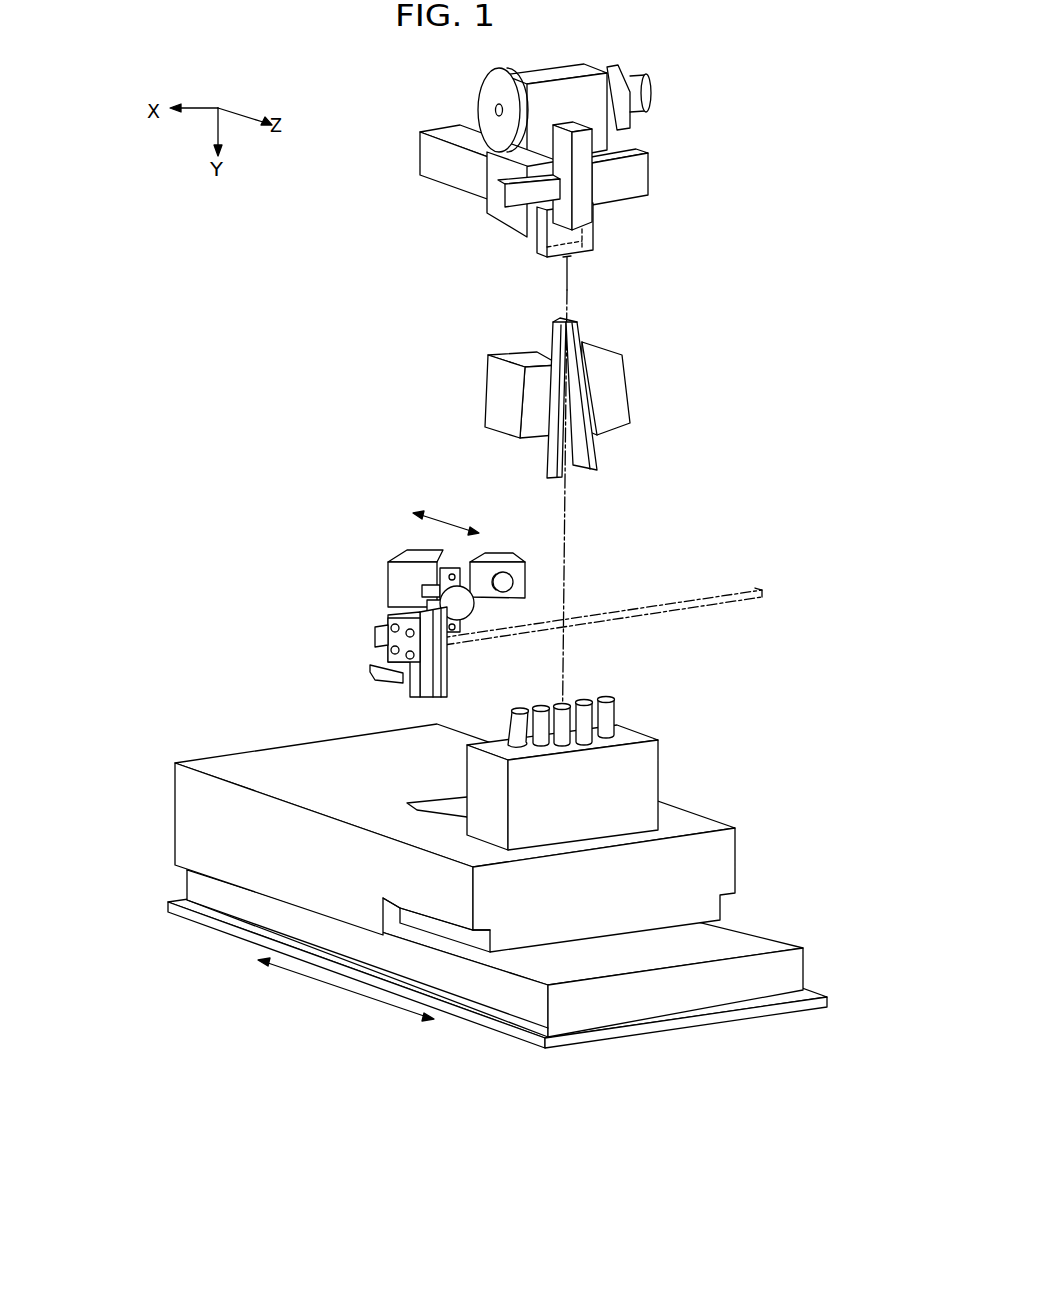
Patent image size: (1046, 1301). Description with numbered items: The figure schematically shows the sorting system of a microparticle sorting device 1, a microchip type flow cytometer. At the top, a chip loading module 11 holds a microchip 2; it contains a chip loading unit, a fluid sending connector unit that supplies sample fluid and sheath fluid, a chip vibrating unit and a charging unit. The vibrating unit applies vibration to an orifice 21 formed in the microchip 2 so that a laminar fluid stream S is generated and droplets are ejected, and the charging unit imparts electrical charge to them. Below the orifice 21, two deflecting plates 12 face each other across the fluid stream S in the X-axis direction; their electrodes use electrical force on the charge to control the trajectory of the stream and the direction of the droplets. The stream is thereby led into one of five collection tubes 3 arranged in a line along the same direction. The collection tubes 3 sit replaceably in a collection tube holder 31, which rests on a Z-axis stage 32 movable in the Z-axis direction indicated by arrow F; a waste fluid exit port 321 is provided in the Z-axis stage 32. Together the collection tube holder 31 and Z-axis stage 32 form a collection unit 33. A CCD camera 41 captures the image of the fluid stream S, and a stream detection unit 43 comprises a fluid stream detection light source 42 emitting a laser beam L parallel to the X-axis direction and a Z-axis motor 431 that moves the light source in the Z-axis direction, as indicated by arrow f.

The microparticle sorting device 1 is at (237, 356).
The chip loading module 11 is at (648, 85).
The microchip 2 is at (596, 222).
The orifice 21 is at (569, 259).
The fluid stream S is at (569, 302).
The deflecting plate 12 is at (662, 378).
The CCD camera 41 is at (528, 568).
The laser beam L is at (757, 588).
The stream detection unit 43 is at (176, 727).
The Z-axis motor 431 is at (422, 588).
The fluid stream detection light source 42 is at (380, 633).
The collection tubes 3 is at (617, 713).
The collection unit 33 is at (297, 1060).
The collection tube holder 31 is at (537, 843).
The Z-axis stage 32 is at (590, 937).
The waste fluid exit port 321 is at (410, 804).